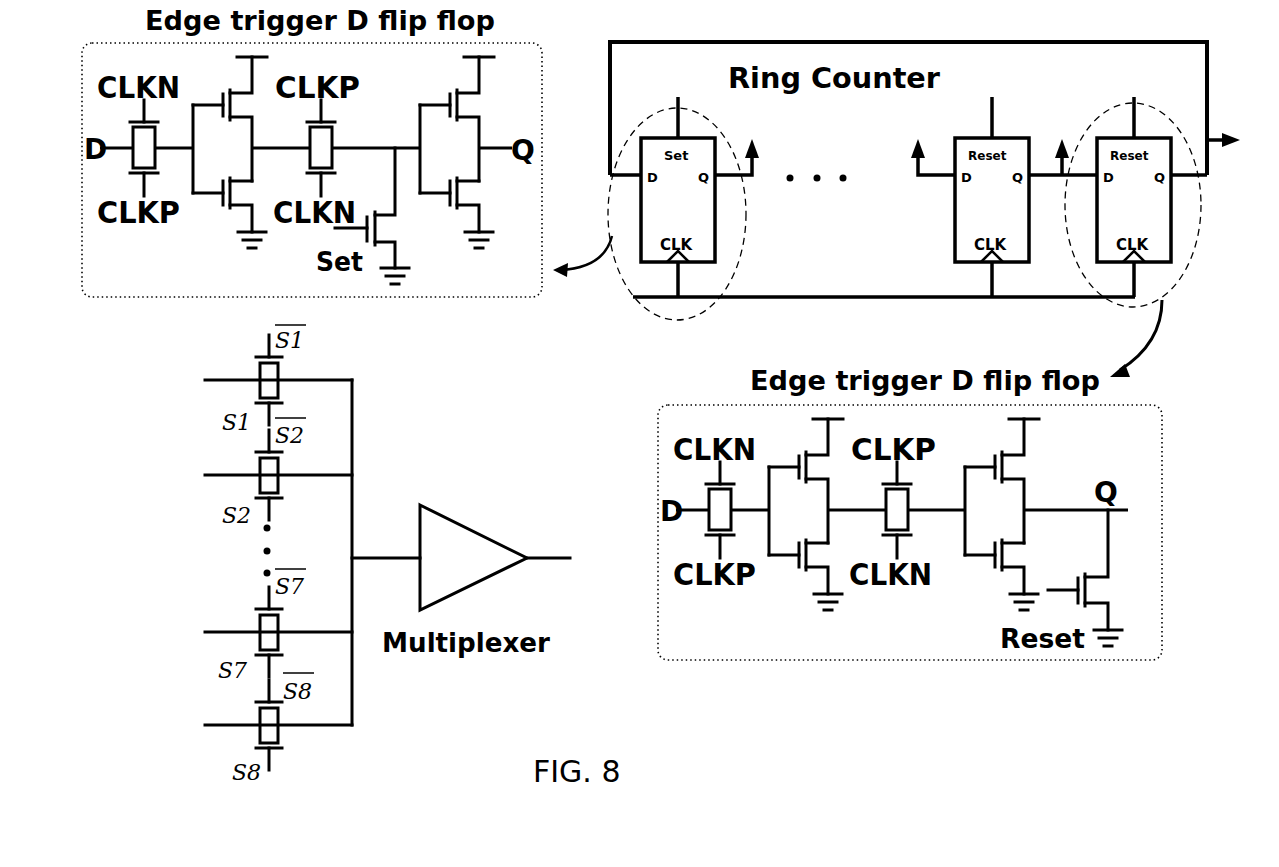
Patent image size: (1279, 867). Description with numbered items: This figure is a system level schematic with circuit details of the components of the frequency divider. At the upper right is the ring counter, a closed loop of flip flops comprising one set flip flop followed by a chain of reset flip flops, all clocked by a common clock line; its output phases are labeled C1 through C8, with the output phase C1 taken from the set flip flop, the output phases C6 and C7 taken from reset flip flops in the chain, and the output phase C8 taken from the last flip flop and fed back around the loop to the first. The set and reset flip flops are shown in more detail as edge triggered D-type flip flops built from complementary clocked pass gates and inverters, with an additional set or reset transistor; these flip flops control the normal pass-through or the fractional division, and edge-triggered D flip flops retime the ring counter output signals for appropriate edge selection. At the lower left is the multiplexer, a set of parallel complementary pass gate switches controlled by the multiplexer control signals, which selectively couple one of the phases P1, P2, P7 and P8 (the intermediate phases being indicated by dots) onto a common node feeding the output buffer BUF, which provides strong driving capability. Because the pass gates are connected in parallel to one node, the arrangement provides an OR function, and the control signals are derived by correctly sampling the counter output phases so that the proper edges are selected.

The output phase C1 is at (747, 141).
The output phase C6 is at (930, 141).
The output phase C7 is at (1063, 141).
The output phase C8 is at (1216, 141).
The phase P1 is at (256, 380).
The phase P2 is at (256, 475).
The phase P7 is at (256, 632).
The phase P8 is at (256, 725).
The output buffer BUF is at (495, 557).